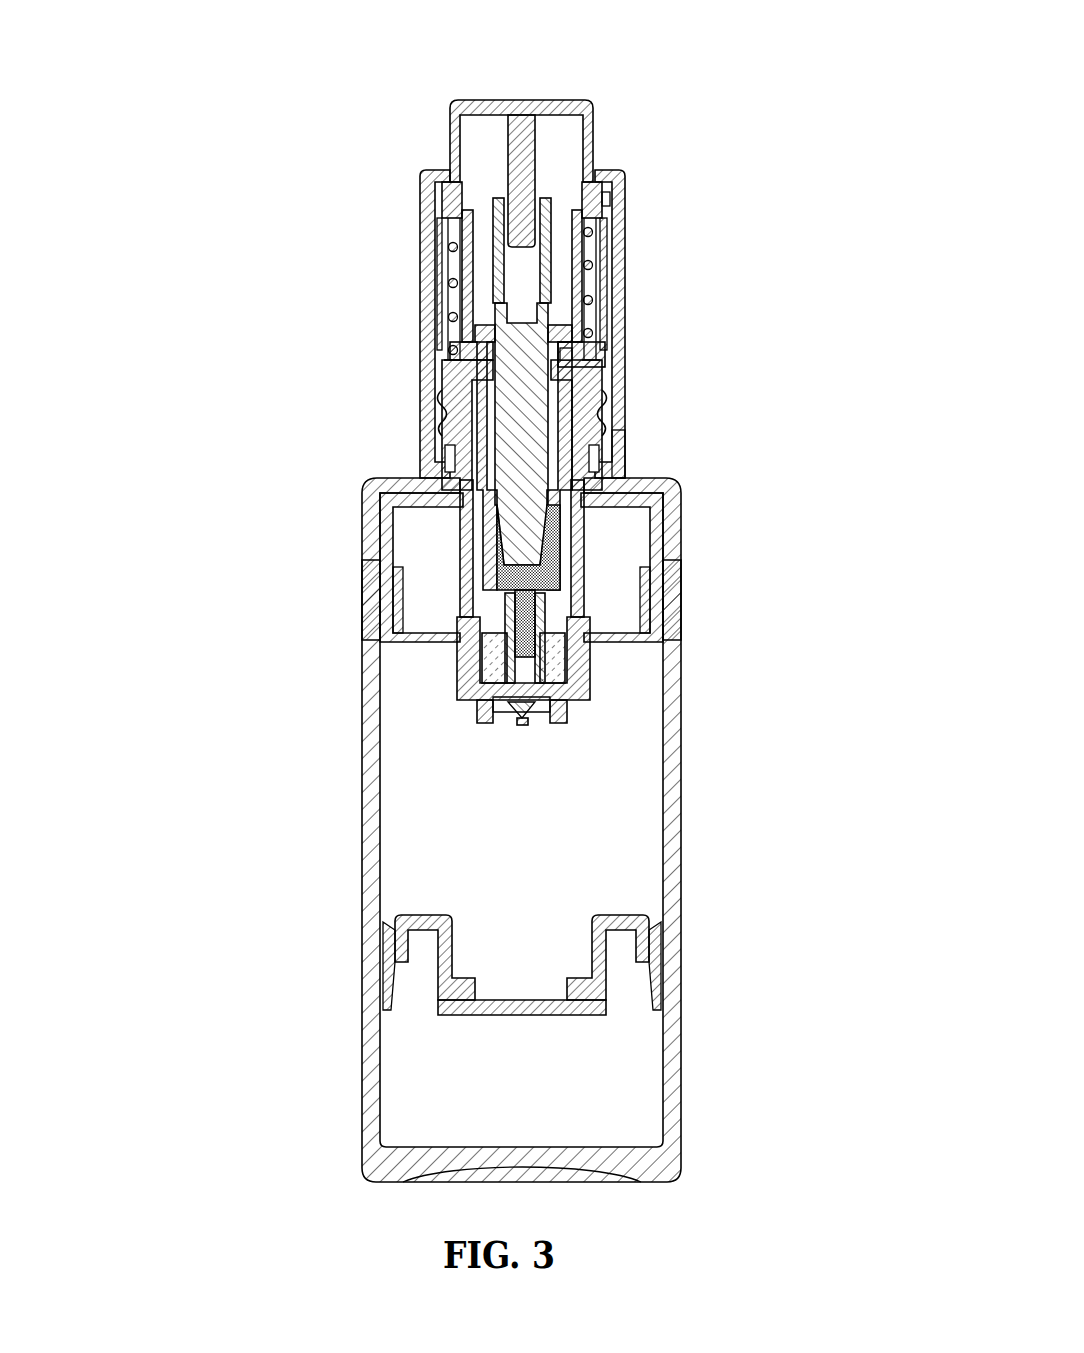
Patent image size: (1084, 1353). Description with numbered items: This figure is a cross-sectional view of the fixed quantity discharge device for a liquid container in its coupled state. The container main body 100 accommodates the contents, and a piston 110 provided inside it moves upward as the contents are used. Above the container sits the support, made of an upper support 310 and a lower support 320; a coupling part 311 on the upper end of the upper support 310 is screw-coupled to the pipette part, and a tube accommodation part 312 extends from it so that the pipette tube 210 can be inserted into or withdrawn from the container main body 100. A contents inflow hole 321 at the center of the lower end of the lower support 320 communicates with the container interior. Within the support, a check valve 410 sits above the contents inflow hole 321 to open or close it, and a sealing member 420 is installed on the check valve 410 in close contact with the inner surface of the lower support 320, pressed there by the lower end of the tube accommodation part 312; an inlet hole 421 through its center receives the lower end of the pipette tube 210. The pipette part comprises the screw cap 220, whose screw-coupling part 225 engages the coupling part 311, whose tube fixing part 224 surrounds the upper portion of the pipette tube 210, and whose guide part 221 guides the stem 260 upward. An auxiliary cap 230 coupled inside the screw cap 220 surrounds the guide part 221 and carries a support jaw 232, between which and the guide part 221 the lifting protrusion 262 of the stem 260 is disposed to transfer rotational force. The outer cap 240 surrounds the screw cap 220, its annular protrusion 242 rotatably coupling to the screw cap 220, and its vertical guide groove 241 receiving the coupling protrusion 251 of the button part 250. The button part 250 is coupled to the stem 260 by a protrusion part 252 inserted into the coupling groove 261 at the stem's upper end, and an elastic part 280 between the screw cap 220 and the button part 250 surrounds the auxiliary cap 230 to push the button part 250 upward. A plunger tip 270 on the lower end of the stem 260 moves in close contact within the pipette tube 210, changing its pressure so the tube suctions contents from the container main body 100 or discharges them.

The container main body 100 is at (360, 812).
The piston 110 is at (398, 930).
The pipette tube 210 is at (575, 405).
The screw cap 220 is at (435, 395).
The guide part 221 is at (468, 292).
The tube fixing part 224 is at (455, 362).
The screw-coupling part 225 is at (440, 425).
The auxiliary cap 230 is at (594, 240).
The support jaw 232 is at (455, 262).
The outer cap 240 is at (420, 280).
The vertical guide groove 241 is at (438, 232).
The annular protrusion 242 is at (438, 455).
The button part 250 is at (453, 121).
The coupling protrusion 251 is at (452, 196).
The protrusion part 252 is at (521, 133).
The stem 260 is at (530, 387).
The coupling groove 261 is at (610, 199).
The lifting protrusion 262 is at (580, 302).
The plunger tip 270 is at (497, 535).
The elastic part 280 is at (568, 336).
The upper support 310 is at (663, 548).
The coupling part 311 is at (627, 443).
The tube accommodation part 312 is at (600, 590).
The lower support 320 is at (654, 637).
The contents inflow hole 321 is at (516, 728).
The check valve 410 is at (482, 705).
The sealing member 420 is at (478, 655).
The inlet hole 421 is at (504, 630).